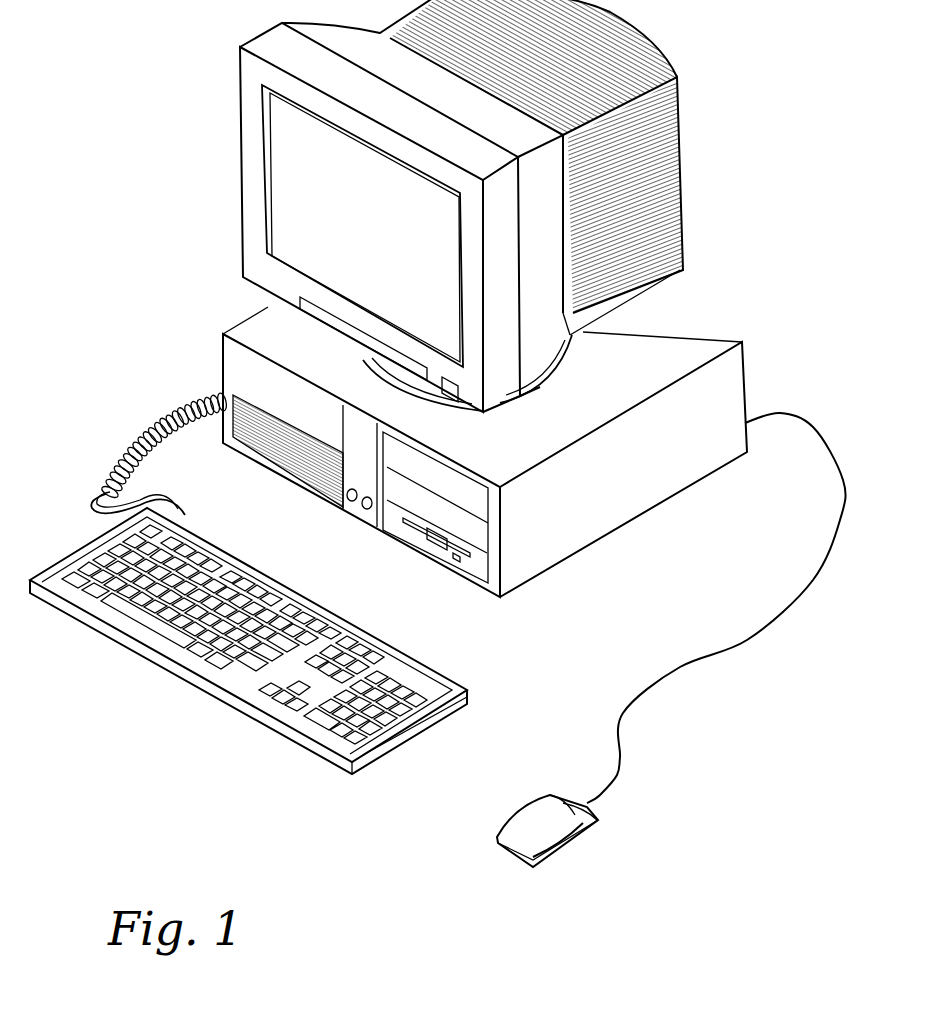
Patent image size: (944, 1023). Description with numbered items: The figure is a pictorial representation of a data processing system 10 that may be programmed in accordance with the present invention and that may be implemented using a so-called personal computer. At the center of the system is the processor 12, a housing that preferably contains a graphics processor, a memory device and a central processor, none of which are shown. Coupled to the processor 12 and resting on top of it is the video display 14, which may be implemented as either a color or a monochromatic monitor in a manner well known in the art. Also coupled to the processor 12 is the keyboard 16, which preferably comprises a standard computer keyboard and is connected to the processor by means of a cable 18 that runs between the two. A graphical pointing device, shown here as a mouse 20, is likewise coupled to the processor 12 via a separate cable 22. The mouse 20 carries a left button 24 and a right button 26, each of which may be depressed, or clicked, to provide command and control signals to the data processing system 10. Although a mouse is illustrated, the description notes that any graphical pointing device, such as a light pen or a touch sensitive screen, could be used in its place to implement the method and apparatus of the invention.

The data processing system 10 is at (107, 170).
The processor 12 is at (523, 572).
The video display 14 is at (667, 160).
The keyboard 16 is at (130, 618).
The cable 18 is at (133, 457).
The mouse 20 is at (547, 857).
The cable 22 is at (687, 667).
The left button 24 is at (533, 793).
The right button 26 is at (597, 808).